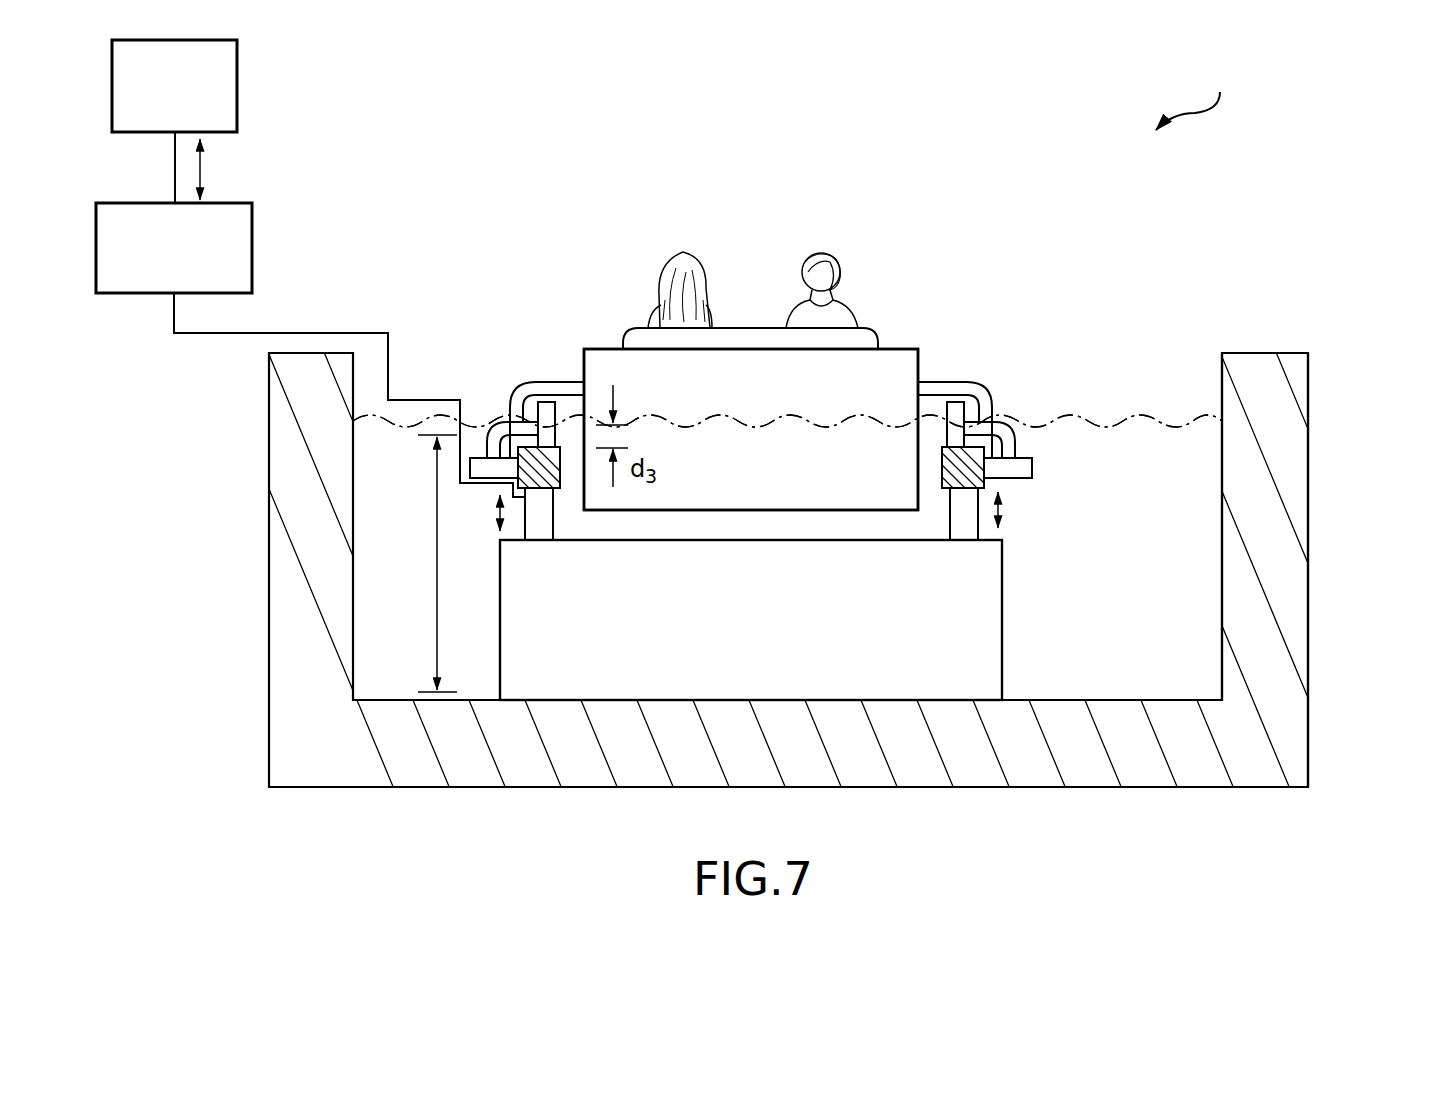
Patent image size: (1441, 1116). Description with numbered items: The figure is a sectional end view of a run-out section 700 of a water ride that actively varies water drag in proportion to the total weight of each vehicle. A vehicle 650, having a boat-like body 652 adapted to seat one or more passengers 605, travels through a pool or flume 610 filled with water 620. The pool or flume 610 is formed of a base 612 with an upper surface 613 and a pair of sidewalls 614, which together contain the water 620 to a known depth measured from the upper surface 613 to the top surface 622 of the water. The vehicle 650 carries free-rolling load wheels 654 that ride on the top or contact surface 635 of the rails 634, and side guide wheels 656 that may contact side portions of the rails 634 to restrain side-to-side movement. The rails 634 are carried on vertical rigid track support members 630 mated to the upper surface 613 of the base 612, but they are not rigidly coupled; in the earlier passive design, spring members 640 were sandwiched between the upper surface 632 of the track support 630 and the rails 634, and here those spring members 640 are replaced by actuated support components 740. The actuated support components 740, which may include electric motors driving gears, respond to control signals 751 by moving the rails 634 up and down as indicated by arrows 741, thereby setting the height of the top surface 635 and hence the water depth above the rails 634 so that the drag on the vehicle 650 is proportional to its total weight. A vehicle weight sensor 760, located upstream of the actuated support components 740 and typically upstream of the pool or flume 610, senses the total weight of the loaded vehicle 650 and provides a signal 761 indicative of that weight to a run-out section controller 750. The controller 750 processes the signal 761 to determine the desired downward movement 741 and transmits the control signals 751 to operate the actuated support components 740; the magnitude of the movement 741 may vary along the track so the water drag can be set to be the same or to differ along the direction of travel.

The run-out section 700 is at (1198, 96).
The vehicle weight sensor 760 is at (238, 62).
The signal indicative of vehicle total weight 761 is at (175, 160).
The run-out section controller 750 is at (253, 250).
The control signals 751 is at (173, 318).
The passengers 605 is at (803, 250).
The vehicle 650 is at (899, 324).
The body 652 is at (913, 358).
The load wheels 654 is at (958, 405).
The side guide wheels 656 is at (1037, 459).
The top surface of the water 622 is at (1160, 428).
The water 620 is at (1193, 462).
The sidewalls 614 is at (1270, 525).
The pool or flume 610 is at (1322, 746).
The base 612 is at (987, 757).
The upper surface 613 is at (1110, 697).
The track support members 630 is at (1022, 588).
The upper surface of the vertical track support 632 is at (731, 531).
The rails 634 is at (565, 489).
The top or contact surface 635 is at (557, 477).
The spring members 640 is at (488, 502).
The movement arrows 741 is at (500, 513).
The actuated support components 740 is at (543, 522).